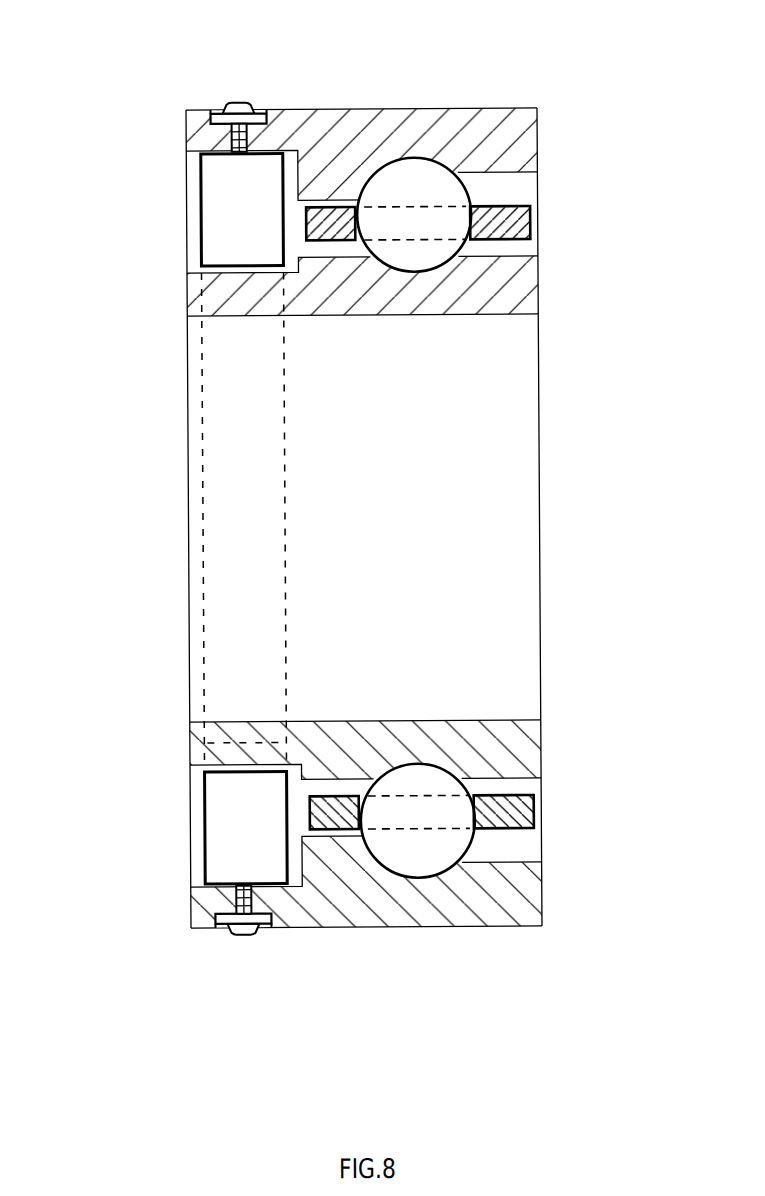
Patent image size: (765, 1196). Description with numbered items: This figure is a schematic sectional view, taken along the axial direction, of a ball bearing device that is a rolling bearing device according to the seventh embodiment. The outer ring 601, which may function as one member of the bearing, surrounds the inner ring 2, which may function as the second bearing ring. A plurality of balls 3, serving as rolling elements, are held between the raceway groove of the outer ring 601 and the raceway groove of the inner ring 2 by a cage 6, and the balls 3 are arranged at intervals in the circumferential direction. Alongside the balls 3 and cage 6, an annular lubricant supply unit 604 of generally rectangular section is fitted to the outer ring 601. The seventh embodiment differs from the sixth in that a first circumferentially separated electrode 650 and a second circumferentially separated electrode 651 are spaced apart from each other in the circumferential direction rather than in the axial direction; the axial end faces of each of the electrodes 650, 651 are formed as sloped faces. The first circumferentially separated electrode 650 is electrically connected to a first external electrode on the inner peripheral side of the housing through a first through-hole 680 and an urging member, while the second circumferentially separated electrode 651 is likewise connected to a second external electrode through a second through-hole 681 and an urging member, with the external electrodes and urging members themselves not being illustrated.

The outer ring 601 is at (424, 133).
The inner ring 2 is at (523, 287).
The balls 3 is at (447, 190).
The cage 6 is at (530, 222).
The first through-hole 680 is at (203, 153).
The lubricant supply unit 604 is at (227, 208).
The second through-hole 681 is at (233, 912).
The first circumferentially separated electrode 650 is at (240, 100).
The second circumferentially separated electrode 651 is at (240, 938).